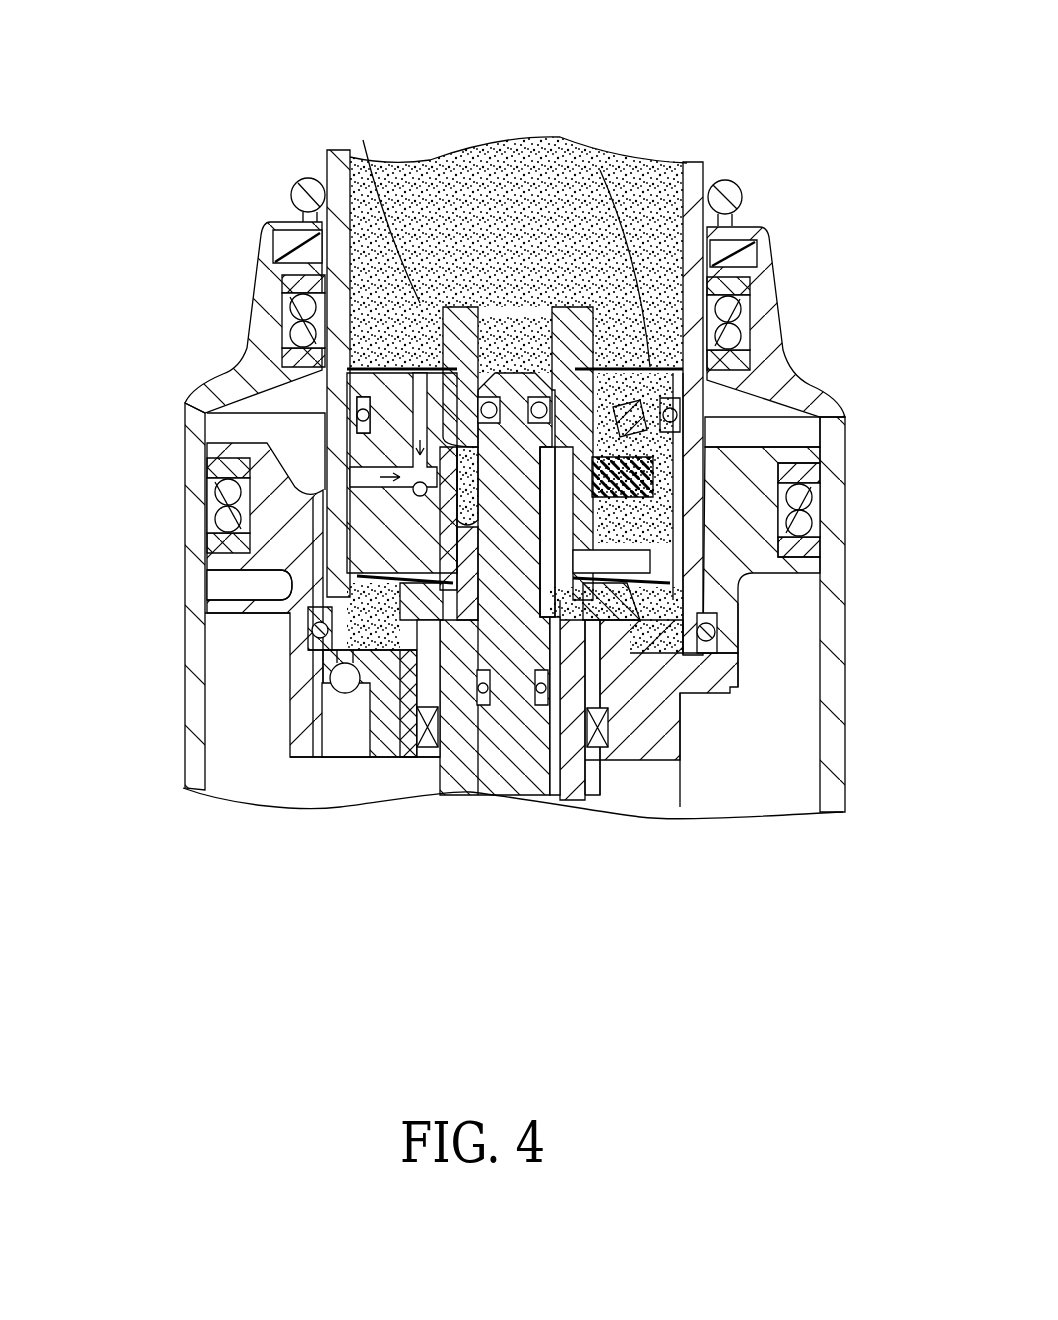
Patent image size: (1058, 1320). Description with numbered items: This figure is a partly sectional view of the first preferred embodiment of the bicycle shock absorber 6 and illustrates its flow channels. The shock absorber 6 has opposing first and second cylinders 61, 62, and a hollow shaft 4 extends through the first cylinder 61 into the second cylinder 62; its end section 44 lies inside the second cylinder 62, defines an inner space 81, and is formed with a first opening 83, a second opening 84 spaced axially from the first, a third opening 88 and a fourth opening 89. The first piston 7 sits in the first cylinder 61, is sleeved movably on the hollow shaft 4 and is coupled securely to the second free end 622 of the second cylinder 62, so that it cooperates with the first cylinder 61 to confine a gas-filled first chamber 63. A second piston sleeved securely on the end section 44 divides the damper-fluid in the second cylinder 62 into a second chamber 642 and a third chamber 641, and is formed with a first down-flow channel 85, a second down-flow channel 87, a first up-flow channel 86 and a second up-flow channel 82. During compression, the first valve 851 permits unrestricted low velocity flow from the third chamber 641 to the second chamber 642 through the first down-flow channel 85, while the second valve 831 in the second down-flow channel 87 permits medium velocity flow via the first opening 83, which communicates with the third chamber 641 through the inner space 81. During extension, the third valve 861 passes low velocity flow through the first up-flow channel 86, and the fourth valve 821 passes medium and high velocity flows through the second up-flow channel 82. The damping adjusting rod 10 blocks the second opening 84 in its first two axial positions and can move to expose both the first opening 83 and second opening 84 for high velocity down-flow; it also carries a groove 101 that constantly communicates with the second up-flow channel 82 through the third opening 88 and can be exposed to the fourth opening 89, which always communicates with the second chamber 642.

The hollow shaft 4 is at (586, 782).
The shock absorber 6 is at (218, 364).
The first piston 7 is at (297, 758).
The damping adjusting rod 10 is at (515, 370).
The end section 44 is at (620, 608).
The first cylinder 61 is at (847, 503).
The second cylinder 62 is at (707, 172).
The first chamber 63 is at (788, 750).
The inner space 81 is at (540, 340).
The second up-flow channel 82 is at (383, 560).
The first opening 83 is at (483, 307).
The second opening 84 is at (340, 429).
The first down-flow channel 85 is at (420, 445).
The first up-flow channel 86 is at (327, 382).
The second down-flow channel 87 is at (630, 417).
The third opening 88 is at (457, 523).
The fourth opening 89 is at (585, 590).
The groove 101 is at (548, 615).
The second free end 622 is at (325, 533).
The third chamber 641 is at (663, 307).
The second chamber 642 is at (717, 627).
The fourth valve 821 is at (350, 217).
The second valve 831 is at (630, 405).
The first valve 851 is at (397, 652).
The third valve 861 is at (413, 368).